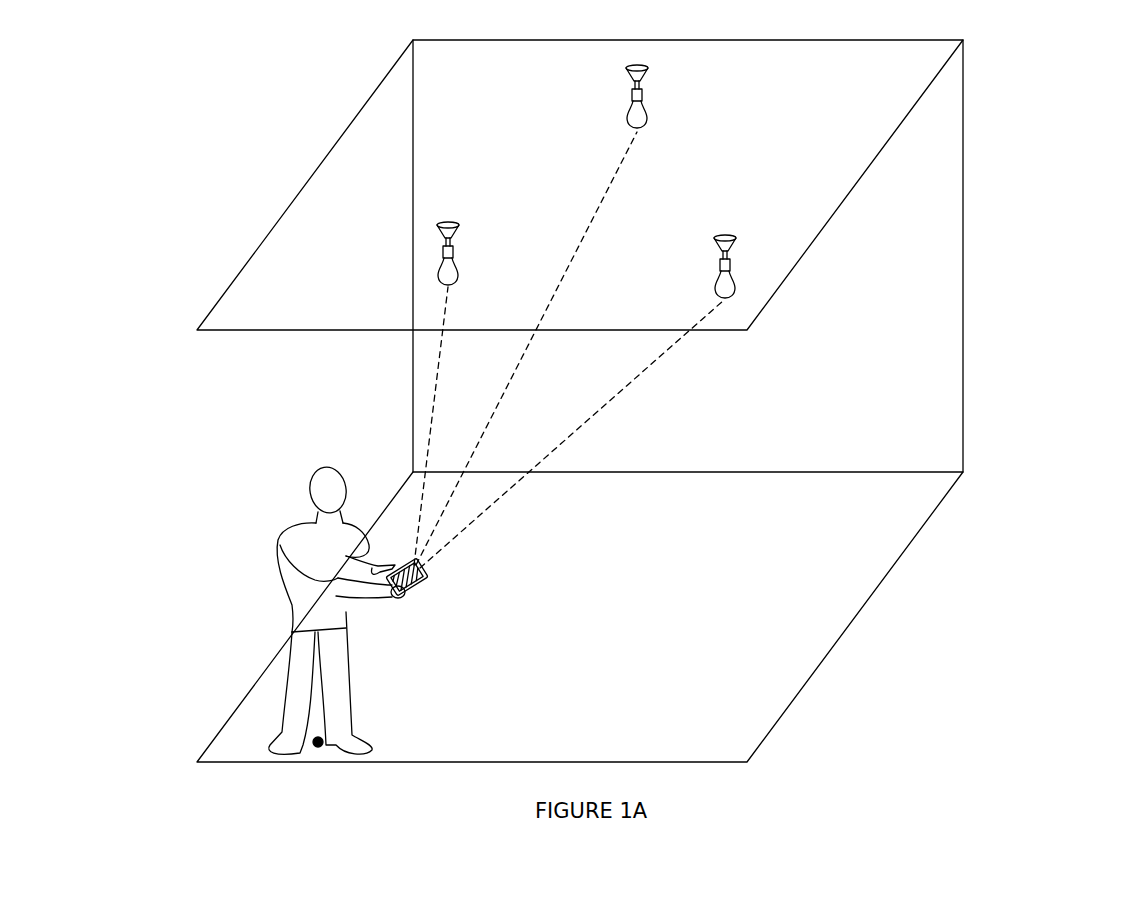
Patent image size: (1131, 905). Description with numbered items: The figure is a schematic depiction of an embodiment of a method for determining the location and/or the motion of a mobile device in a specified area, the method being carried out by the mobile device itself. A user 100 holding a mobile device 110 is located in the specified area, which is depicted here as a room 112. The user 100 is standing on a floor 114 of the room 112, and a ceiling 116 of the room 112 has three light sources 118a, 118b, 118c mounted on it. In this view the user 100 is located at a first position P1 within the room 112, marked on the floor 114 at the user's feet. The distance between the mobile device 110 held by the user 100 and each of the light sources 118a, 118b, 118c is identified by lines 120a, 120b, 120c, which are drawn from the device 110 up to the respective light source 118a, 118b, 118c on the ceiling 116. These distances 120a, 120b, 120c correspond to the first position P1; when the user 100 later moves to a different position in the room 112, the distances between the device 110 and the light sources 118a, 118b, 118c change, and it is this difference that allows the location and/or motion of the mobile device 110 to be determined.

The user 100 is at (293, 600).
The mobile device 110 is at (425, 590).
The room 112 is at (928, 340).
The floor 114 is at (820, 612).
The ceiling 116 is at (828, 178).
The light source 118a is at (442, 275).
The light source 118b is at (645, 130).
The light source 118c is at (735, 298).
The line 120a is at (440, 350).
The line 120b is at (487, 427).
The line 120c is at (645, 373).
The first position P1 is at (318, 748).